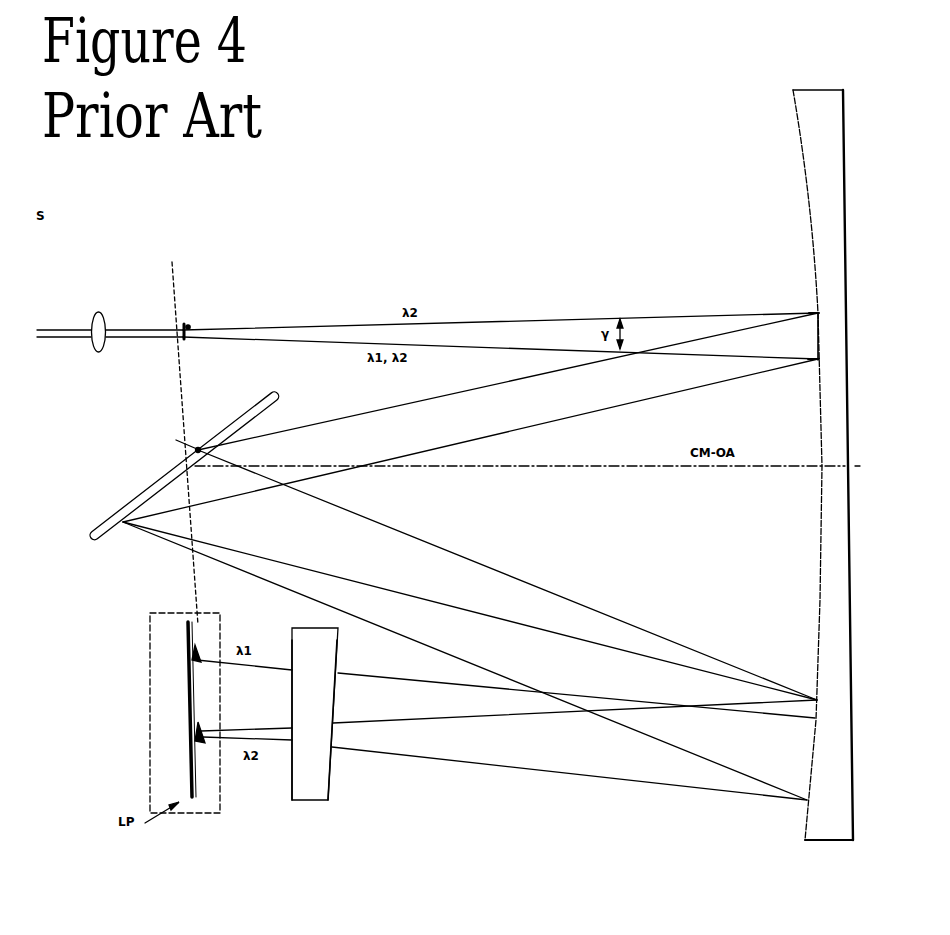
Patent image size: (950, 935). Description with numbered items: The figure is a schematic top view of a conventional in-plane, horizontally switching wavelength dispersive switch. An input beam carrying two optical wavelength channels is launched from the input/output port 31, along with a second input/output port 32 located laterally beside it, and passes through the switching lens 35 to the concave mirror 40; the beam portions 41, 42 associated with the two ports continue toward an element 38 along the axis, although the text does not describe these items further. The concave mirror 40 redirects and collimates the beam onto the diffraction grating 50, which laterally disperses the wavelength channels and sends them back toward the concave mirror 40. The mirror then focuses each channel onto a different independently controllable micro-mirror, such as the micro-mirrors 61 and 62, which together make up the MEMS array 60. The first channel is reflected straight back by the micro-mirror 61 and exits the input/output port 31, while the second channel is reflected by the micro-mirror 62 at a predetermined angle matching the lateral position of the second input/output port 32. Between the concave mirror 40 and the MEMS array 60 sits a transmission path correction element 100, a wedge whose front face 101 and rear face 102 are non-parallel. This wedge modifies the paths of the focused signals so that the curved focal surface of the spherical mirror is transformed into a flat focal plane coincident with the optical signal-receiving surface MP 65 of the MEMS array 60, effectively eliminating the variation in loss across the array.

The input/output port 31 is at (64, 322).
The second input/output port 32 is at (64, 345).
The switching lens 35 is at (100, 331).
The beam splitter / dichroic element 38 is at (189, 326).
The concave mirror 40 is at (823, 465).
The first collimated beam 41 is at (144, 322).
The second collimated beam 42 is at (144, 345).
The diffraction grating 50 is at (158, 470).
The MEMS array 60 is at (158, 713).
The micro-mirror 61 is at (228, 658).
The micro-mirror 62 is at (228, 732).
The optical signal-receiving surface MP 65 is at (186, 782).
The transmission path correction element 100 is at (315, 714).
The front face 101 is at (336, 783).
The rear face 102 is at (291, 783).